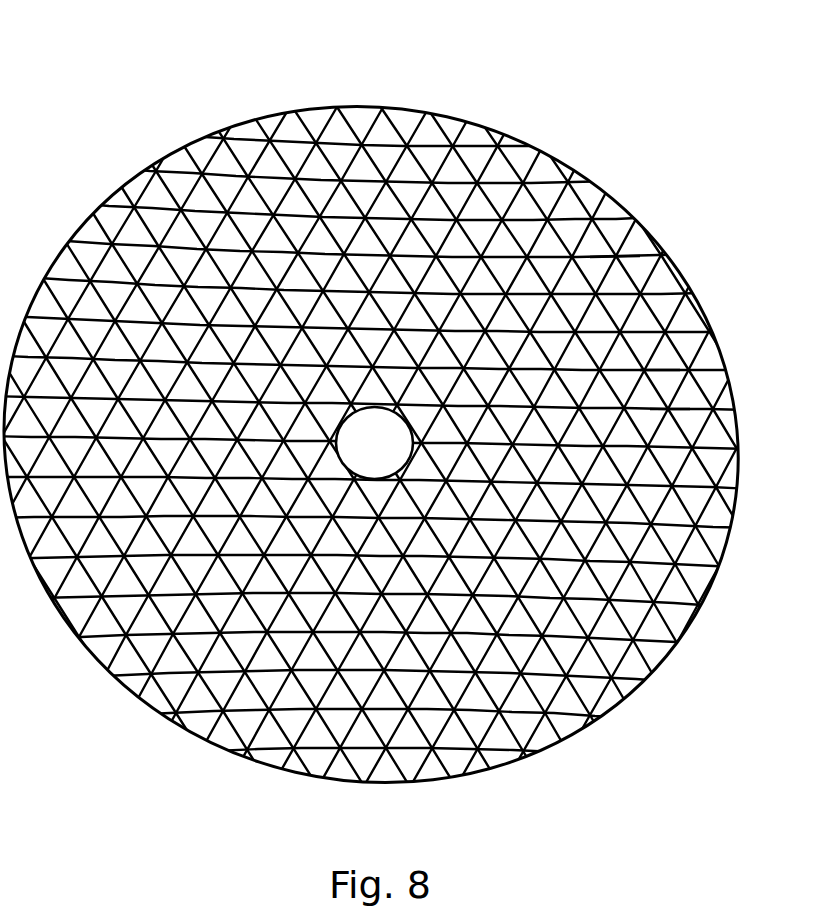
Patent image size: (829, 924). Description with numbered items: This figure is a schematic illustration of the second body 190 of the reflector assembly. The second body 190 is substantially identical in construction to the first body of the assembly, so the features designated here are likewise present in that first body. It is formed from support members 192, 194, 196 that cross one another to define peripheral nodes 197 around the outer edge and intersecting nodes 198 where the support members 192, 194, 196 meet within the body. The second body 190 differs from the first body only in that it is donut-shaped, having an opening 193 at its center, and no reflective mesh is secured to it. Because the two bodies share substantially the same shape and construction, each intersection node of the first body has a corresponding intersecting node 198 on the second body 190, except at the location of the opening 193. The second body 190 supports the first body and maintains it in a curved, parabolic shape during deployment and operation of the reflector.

The second body 190 is at (110, 158).
The support member 192 is at (350, 121).
The opening 193 is at (352, 468).
The support member 194 is at (487, 168).
The support member 196 is at (598, 257).
The peripheral node 197 is at (185, 145).
The intersecting node 198 is at (655, 370).